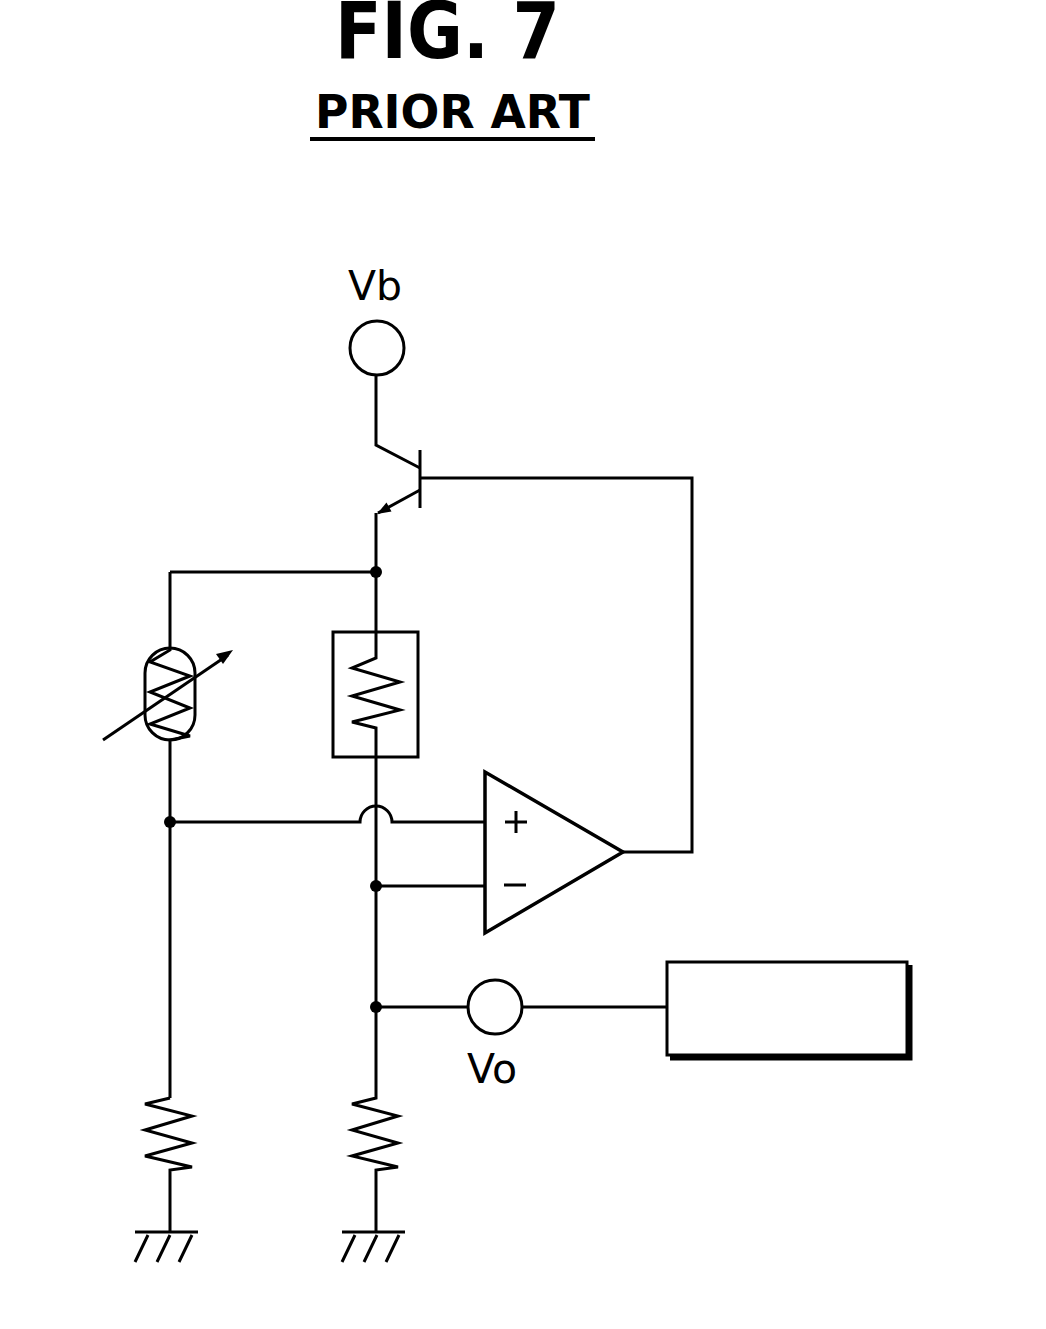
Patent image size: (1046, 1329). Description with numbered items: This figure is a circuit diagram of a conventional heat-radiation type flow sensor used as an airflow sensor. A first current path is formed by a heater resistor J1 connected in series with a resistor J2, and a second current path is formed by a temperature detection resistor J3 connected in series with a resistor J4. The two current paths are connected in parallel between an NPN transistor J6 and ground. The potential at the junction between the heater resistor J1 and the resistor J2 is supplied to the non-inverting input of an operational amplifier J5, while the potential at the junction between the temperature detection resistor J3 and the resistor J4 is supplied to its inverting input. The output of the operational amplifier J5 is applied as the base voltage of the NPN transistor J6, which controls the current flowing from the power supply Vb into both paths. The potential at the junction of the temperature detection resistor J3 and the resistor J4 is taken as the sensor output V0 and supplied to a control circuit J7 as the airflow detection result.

The heater resistor J1 is at (190, 736).
The resistor J2 is at (183, 1150).
The temperature detection resistor J3 is at (418, 647).
The resistor J4 is at (398, 1140).
The operational amplifier J5 is at (582, 825).
The NPN transistor J6 is at (421, 460).
The control circuit J7 is at (845, 962).